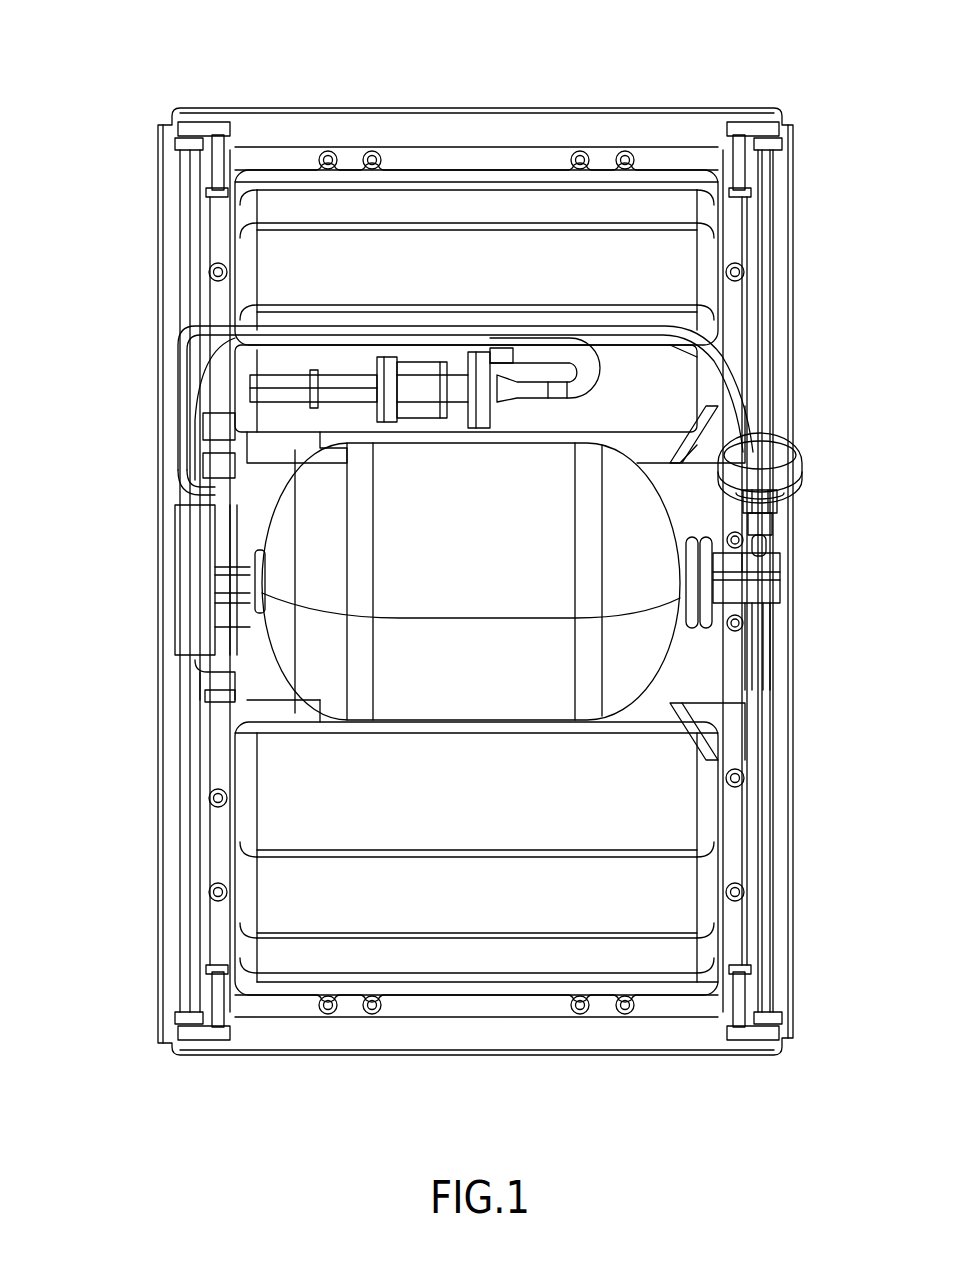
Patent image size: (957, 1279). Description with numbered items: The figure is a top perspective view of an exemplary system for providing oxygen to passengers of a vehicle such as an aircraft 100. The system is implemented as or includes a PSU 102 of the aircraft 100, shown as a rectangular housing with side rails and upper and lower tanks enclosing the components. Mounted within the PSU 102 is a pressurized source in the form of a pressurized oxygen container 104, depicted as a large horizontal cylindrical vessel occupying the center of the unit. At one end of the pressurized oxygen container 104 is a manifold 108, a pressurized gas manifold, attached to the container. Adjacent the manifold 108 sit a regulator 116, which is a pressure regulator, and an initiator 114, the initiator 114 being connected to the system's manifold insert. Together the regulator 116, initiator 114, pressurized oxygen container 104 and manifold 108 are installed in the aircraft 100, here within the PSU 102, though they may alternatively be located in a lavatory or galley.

The aircraft 100 is at (150, 48).
The PSU 102 is at (471, 101).
The pressurized oxygen container 104 is at (660, 640).
The manifold 108 is at (765, 590).
The initiator 114 is at (760, 455).
The regulator 116 is at (787, 458).